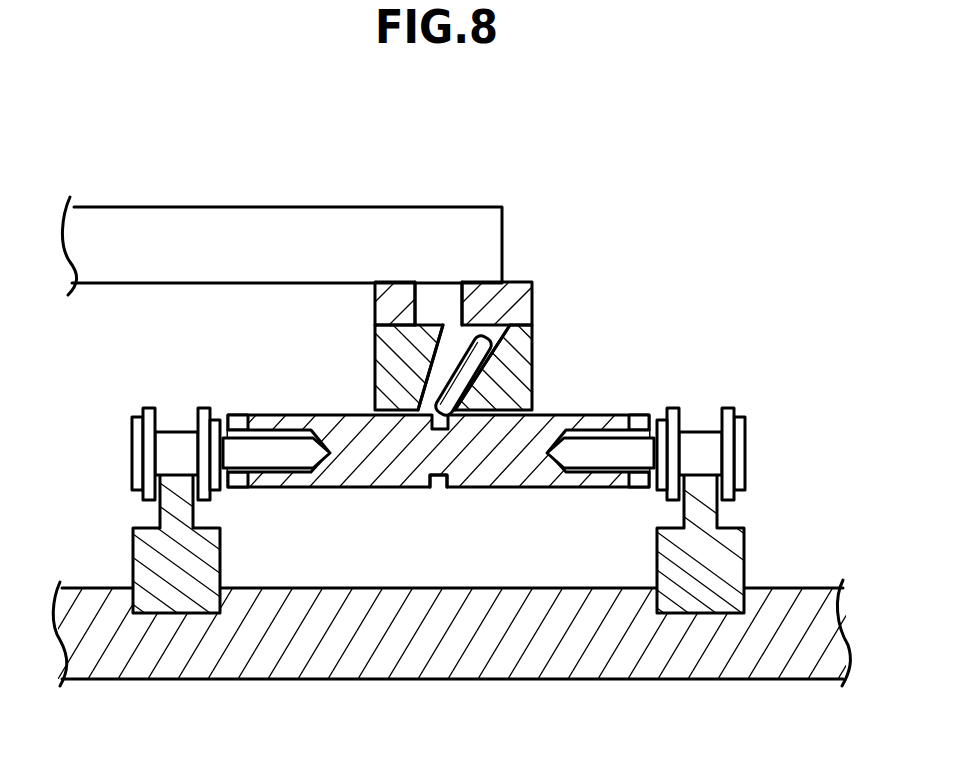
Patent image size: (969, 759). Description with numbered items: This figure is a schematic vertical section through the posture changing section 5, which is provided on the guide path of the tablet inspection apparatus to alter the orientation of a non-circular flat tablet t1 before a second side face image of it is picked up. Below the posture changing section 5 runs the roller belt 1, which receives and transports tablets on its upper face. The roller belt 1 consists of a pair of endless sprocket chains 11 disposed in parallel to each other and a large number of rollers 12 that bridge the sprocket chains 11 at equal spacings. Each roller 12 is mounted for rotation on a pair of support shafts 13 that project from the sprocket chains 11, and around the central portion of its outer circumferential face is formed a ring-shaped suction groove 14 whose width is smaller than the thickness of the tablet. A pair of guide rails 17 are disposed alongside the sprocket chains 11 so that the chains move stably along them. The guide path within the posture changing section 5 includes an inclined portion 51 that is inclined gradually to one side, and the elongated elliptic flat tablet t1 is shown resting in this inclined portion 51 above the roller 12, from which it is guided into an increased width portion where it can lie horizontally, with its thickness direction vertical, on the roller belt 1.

The roller belt 1 is at (688, 374).
The posture changing section 5 is at (556, 297).
The inclined portion 51 is at (444, 382).
The flat tablet t1 is at (466, 380).
The endless sprocket chain 11 is at (174, 451).
The roller 12 is at (356, 455).
The support shaft 13 is at (268, 454).
The suction groove 14 is at (443, 487).
The guide rail 17 is at (173, 558).